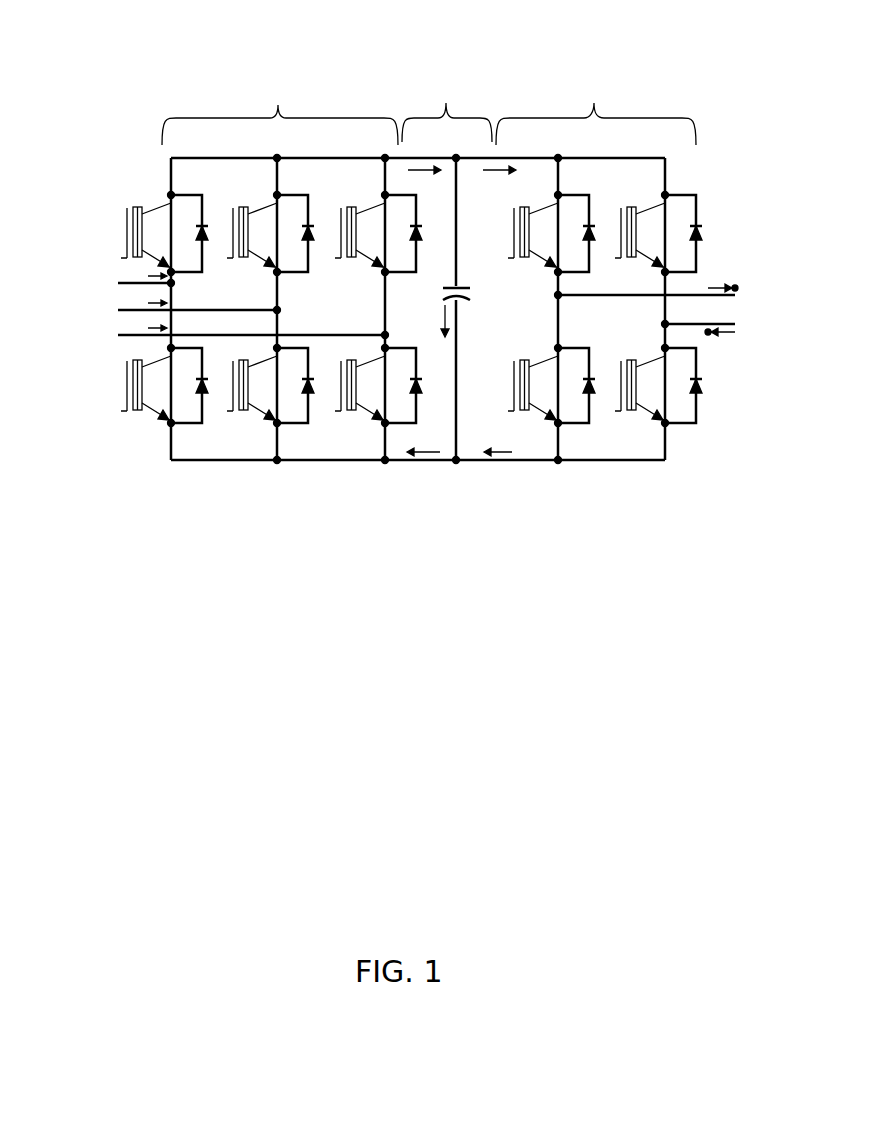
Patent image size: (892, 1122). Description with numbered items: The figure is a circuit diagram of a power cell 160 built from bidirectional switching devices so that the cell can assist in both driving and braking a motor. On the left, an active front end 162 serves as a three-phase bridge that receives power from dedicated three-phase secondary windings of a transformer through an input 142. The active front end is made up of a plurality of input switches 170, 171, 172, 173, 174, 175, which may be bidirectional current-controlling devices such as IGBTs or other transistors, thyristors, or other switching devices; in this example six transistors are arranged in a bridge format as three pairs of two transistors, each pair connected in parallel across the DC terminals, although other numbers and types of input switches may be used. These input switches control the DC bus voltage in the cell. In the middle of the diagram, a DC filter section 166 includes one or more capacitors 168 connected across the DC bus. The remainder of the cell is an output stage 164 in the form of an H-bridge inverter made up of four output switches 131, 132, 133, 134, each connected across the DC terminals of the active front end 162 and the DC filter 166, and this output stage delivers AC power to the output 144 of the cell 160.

The power cell 160 is at (378, 45).
The active front end 162 is at (280, 110).
The output stage 164 is at (596, 110).
The DC filter section 166 is at (447, 108).
The capacitor 168 is at (468, 330).
The input switch 170 is at (135, 418).
The input switch 171 is at (263, 437).
The input switch 172 is at (378, 420).
The input switch 173 is at (128, 200).
The input switch 174 is at (272, 200).
The input switch 175 is at (380, 196).
The output switch 131 is at (604, 212).
The output switch 132 is at (728, 212).
The output switch 133 is at (598, 435).
The output switch 134 is at (715, 432).
The input 142 is at (92, 278).
The output 144 is at (740, 265).